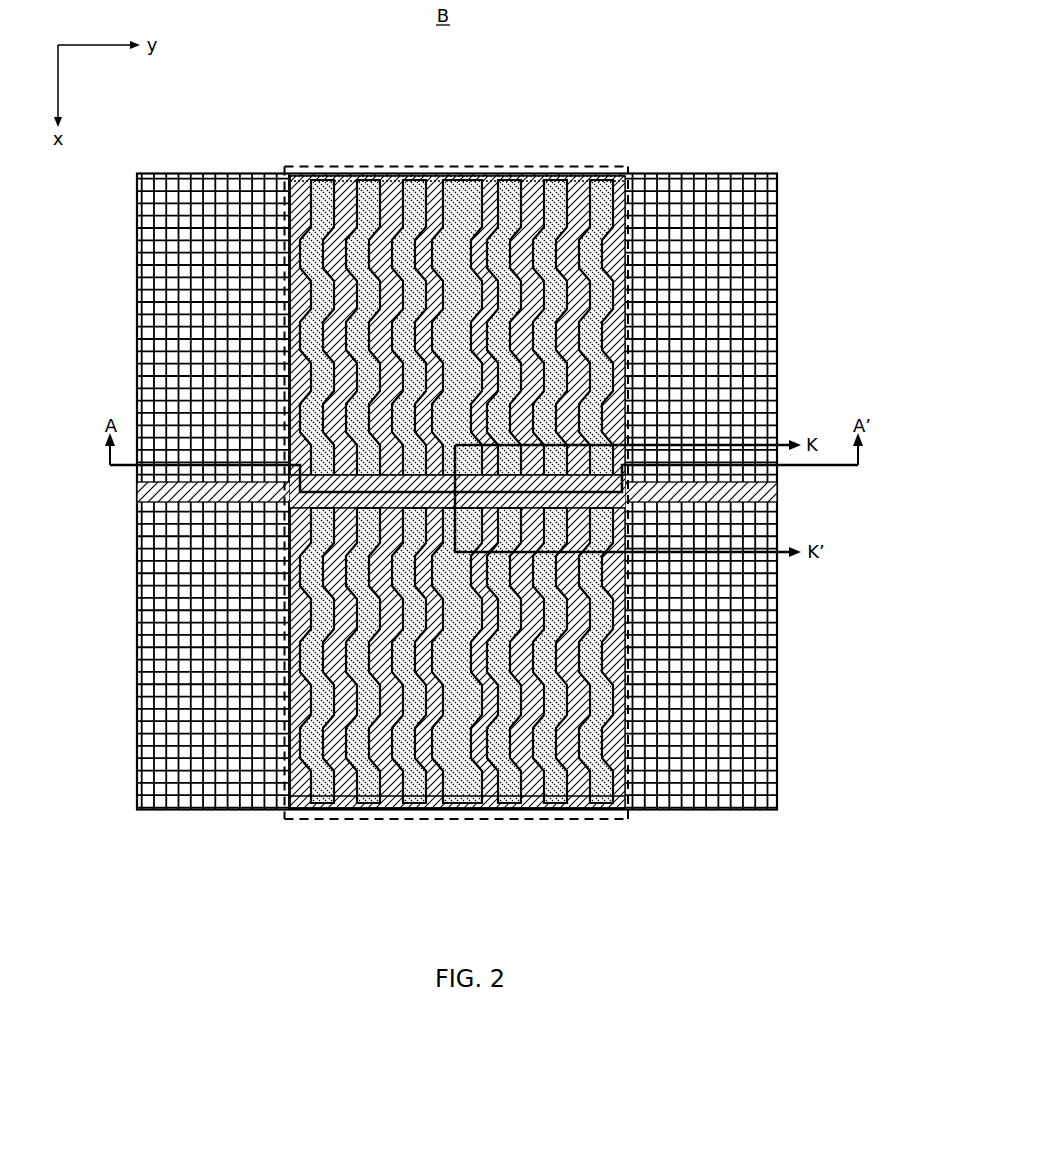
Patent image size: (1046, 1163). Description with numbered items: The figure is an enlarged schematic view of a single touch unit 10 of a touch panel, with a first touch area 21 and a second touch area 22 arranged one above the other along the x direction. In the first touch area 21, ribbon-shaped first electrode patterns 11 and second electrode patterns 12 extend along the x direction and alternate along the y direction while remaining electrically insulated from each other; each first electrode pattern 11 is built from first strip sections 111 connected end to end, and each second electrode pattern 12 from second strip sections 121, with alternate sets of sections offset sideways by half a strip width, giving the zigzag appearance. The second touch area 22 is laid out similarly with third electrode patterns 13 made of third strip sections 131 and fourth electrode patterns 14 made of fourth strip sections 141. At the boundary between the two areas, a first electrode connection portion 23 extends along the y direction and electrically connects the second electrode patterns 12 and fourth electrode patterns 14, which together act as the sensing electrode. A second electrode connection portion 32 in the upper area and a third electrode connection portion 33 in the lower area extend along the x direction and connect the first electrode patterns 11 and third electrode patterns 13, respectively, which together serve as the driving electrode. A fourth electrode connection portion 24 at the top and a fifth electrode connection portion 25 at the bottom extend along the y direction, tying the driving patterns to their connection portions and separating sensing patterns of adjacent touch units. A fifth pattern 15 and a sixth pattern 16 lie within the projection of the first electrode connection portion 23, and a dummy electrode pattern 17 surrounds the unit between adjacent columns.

The touch unit 10 is at (324, 78).
The first electrode pattern 11 is at (402, 297).
The first strip section 111 is at (300, 240).
The second electrode pattern 12 is at (419, 297).
The second strip section 121 is at (318, 237).
The third electrode pattern 13 is at (411, 688).
The third strip section 131 is at (291, 758).
The fourth electrode pattern 14 is at (429, 694).
The fourth strip section 141 is at (327, 753).
The fifth pattern 15 is at (437, 492).
The sixth pattern 16 is at (483, 483).
The dummy electrode pattern 17 is at (167, 590).
The first touch area 21 is at (509, 165).
The second touch area 22 is at (478, 819).
The first electrode connection portion 23 is at (443, 485).
The fourth electrode connection portion 24 is at (556, 173).
The fifth electrode connection portion 25 is at (370, 812).
The second electrode connection portion 32 is at (458, 233).
The third electrode connection portion 33 is at (462, 777).